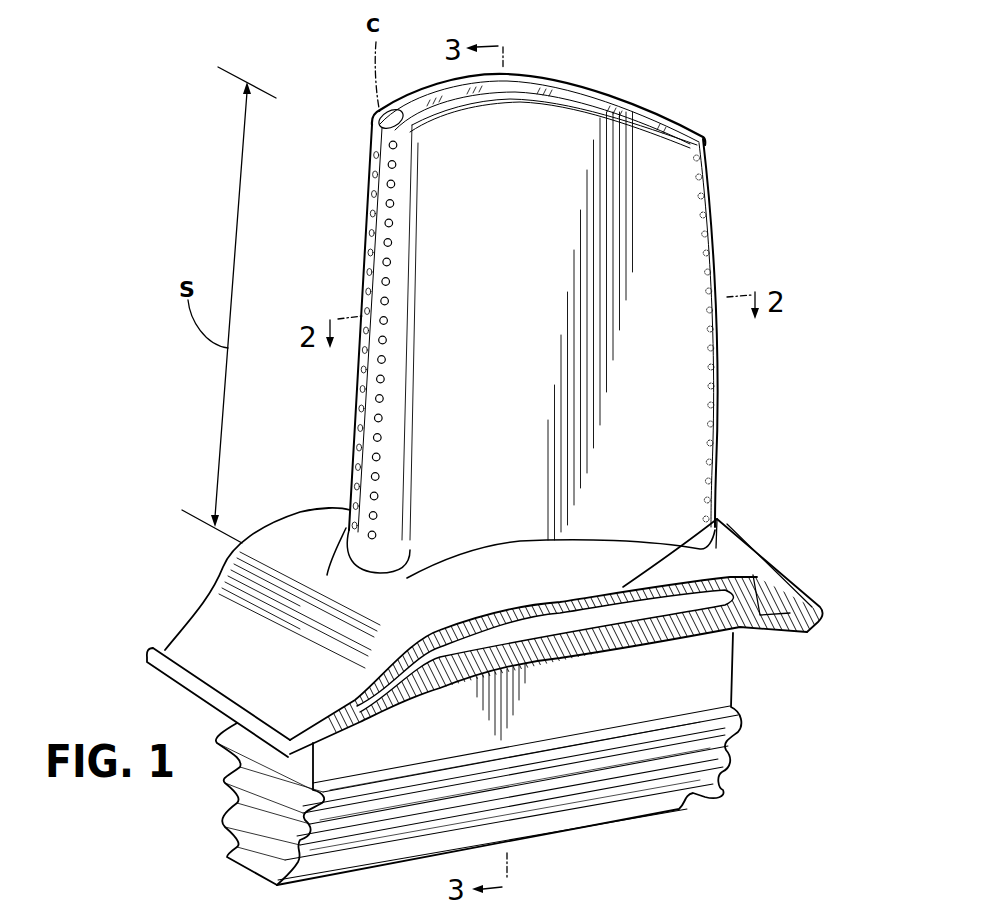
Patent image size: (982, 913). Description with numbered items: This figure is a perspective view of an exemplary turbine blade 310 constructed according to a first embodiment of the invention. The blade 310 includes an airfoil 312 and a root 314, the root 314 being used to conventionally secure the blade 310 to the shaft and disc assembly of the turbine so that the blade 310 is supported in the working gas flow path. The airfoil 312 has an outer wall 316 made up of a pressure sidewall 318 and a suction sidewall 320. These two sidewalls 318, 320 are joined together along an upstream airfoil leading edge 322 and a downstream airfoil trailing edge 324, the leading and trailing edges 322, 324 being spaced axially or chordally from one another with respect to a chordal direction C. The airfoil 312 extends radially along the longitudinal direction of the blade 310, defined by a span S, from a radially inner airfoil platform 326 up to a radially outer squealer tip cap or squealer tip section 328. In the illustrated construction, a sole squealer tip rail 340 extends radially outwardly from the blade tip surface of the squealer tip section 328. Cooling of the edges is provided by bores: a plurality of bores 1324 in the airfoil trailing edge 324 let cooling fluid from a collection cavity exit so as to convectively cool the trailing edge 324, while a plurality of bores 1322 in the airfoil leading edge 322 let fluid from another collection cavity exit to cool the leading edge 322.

The turbine blade 310 is at (797, 138).
The airfoil 312 is at (728, 196).
The root 314 is at (756, 733).
The outer wall 316 is at (664, 382).
The pressure sidewall 318 is at (690, 467).
The suction sidewall 320 is at (665, 117).
The airfoil leading edge 322 is at (372, 273).
The airfoil trailing edge 324 is at (717, 262).
The airfoil platform 326 is at (717, 517).
The squealer tip section 328 is at (616, 91).
The squealer tip rail 340 is at (533, 84).
The bores 1322 is at (358, 434).
The bores 1324 is at (720, 435).